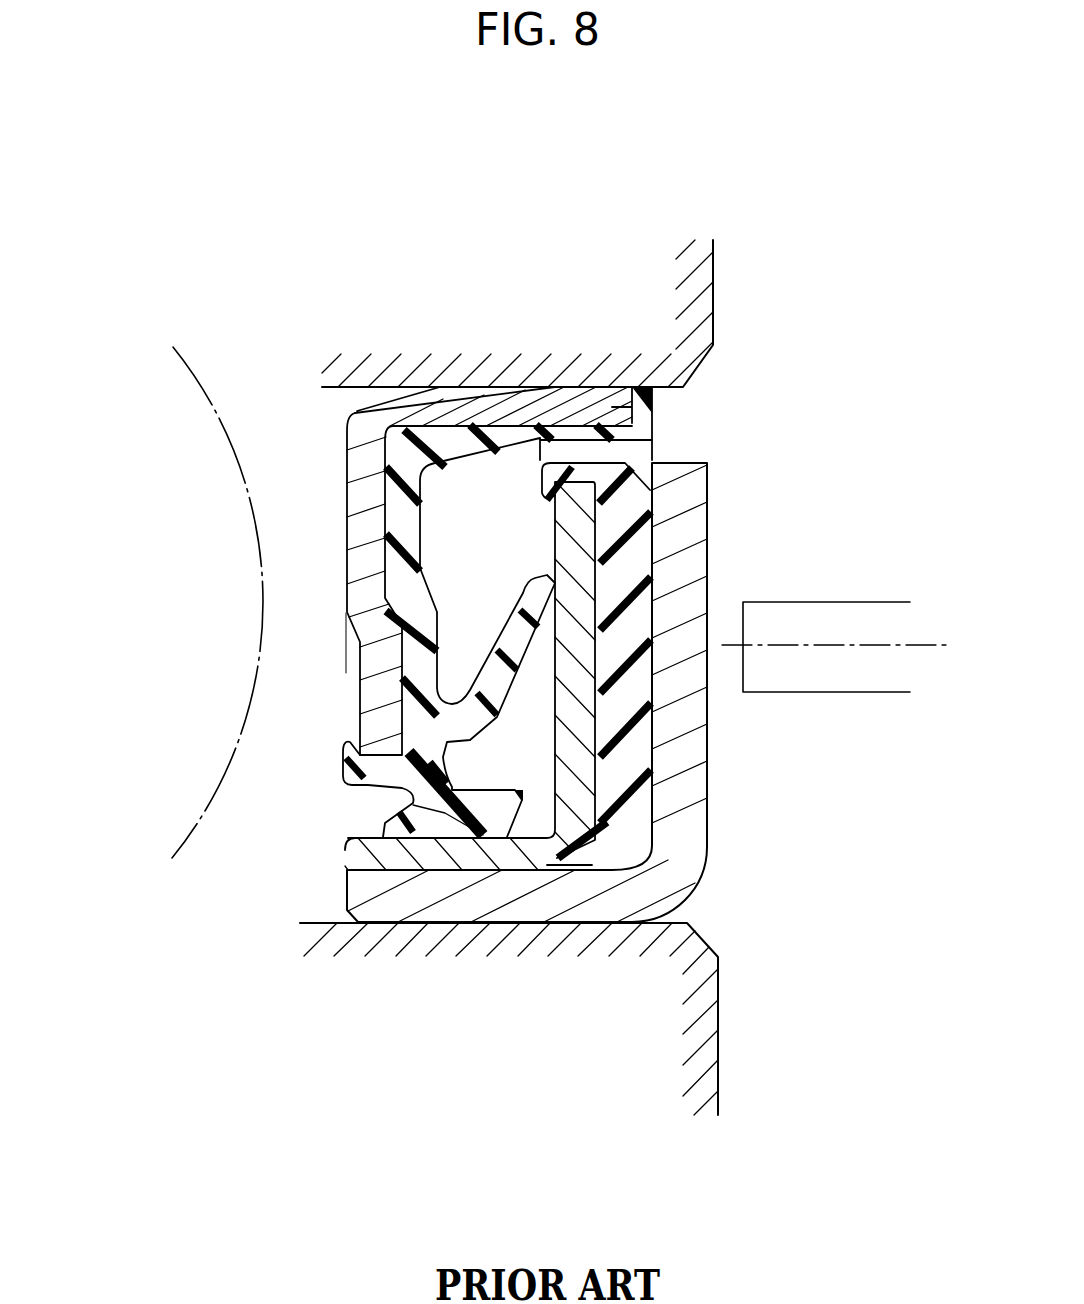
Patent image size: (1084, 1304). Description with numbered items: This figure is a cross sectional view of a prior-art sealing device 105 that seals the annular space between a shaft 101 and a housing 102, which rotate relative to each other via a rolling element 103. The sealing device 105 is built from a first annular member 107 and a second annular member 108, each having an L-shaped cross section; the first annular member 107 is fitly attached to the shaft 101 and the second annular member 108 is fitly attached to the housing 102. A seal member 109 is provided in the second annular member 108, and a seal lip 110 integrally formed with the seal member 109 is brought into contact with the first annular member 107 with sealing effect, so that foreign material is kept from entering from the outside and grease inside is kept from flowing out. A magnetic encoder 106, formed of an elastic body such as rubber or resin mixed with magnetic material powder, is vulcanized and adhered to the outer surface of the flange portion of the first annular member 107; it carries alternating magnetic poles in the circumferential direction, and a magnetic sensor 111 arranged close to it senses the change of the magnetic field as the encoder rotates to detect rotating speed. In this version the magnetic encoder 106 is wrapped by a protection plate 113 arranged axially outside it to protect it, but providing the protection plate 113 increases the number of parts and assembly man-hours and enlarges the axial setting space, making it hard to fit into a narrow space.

The shaft 101 is at (724, 1005).
The housing 102 is at (718, 275).
The rolling element 103 is at (202, 778).
The sealing device 105 is at (346, 404).
The magnetic encoder 106 is at (623, 567).
The first annular member 107 is at (575, 795).
The second annular member 108 is at (654, 407).
The seal member 109 is at (455, 443).
The seal lip 110 is at (518, 642).
The magnetic sensor 111 is at (880, 672).
The protection plate 113 is at (680, 760).